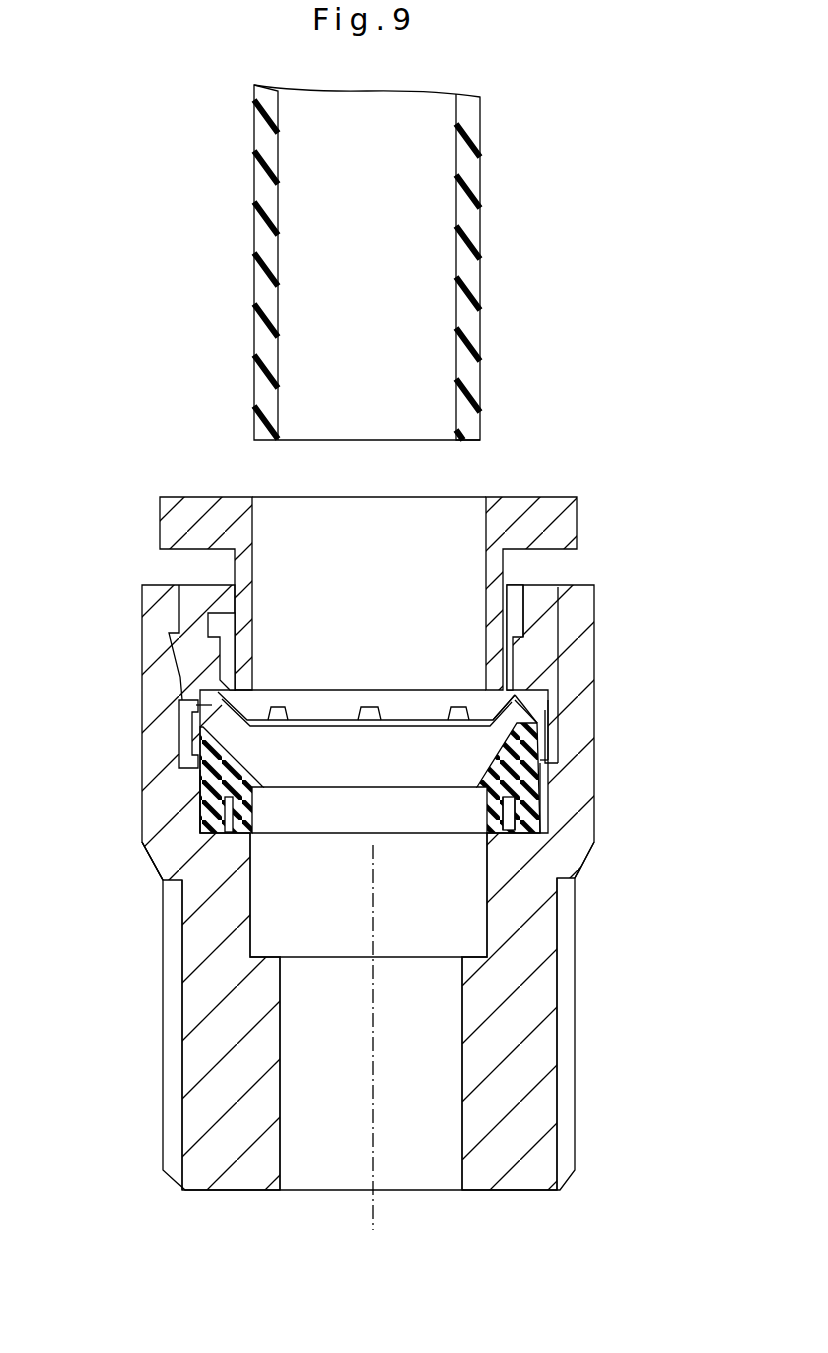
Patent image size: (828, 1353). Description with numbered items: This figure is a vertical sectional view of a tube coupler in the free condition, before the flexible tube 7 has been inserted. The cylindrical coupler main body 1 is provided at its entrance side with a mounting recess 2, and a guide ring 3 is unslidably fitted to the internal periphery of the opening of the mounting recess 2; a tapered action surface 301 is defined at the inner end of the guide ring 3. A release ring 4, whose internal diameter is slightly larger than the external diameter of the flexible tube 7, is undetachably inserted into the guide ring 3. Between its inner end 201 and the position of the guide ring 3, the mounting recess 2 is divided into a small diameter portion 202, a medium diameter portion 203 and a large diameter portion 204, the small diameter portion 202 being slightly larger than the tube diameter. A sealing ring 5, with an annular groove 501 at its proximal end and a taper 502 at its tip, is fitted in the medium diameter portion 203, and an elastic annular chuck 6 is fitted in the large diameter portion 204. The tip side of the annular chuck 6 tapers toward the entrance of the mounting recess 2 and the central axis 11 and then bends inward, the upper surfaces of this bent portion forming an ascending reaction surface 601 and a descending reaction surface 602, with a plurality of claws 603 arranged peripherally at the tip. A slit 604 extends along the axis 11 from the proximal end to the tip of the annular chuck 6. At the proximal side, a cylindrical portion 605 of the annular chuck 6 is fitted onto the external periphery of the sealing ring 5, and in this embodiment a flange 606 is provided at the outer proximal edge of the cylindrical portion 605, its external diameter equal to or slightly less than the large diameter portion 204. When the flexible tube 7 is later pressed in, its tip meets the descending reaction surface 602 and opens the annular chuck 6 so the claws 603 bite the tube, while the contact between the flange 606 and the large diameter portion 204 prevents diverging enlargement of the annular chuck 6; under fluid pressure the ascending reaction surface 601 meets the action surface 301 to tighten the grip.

The coupler main body 1 is at (386, 893).
The mounting recess 2 is at (444, 936).
The guide ring 3 is at (547, 600).
The release ring 4 is at (522, 503).
The sealing ring 5 is at (530, 790).
The annular chuck 6 is at (342, 690).
The flexible tube 7 is at (256, 243).
The central axis 11 is at (376, 1152).
The inner end 201 is at (292, 958).
The small diameter portion 202 is at (252, 888).
The medium diameter portion 203 is at (200, 795).
The large diameter portion 204 is at (180, 757).
The action surface 301 is at (552, 722).
The annular groove 501 is at (508, 833).
The taper 502 is at (369, 810).
The ascending reaction surface 601 is at (548, 700).
The descending reaction surface 602 is at (495, 692).
The claws 603 is at (282, 724).
The slit 604 is at (196, 712).
The cylindrical portion 605 is at (548, 755).
The flange 606 is at (552, 780).